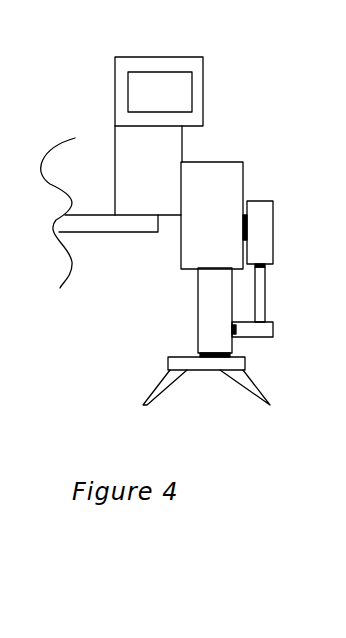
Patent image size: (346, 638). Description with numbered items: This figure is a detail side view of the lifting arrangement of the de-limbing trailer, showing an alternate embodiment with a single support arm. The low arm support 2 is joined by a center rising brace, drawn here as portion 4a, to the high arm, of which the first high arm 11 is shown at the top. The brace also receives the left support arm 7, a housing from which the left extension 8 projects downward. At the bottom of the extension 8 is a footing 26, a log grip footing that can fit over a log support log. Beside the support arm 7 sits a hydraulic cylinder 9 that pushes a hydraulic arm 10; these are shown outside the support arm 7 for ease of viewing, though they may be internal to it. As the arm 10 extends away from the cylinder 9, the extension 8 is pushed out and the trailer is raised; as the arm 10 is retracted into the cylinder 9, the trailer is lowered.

The first high arm 11 is at (199, 102).
The support column 4a is at (122, 168).
The low arm support 2 is at (90, 226).
The left support arm 7 is at (243, 178).
The hydraulic cylinder 9 is at (273, 240).
The hydraulic arm 10 is at (260, 295).
The left extension 8 is at (198, 305).
The footing 26 is at (178, 364).